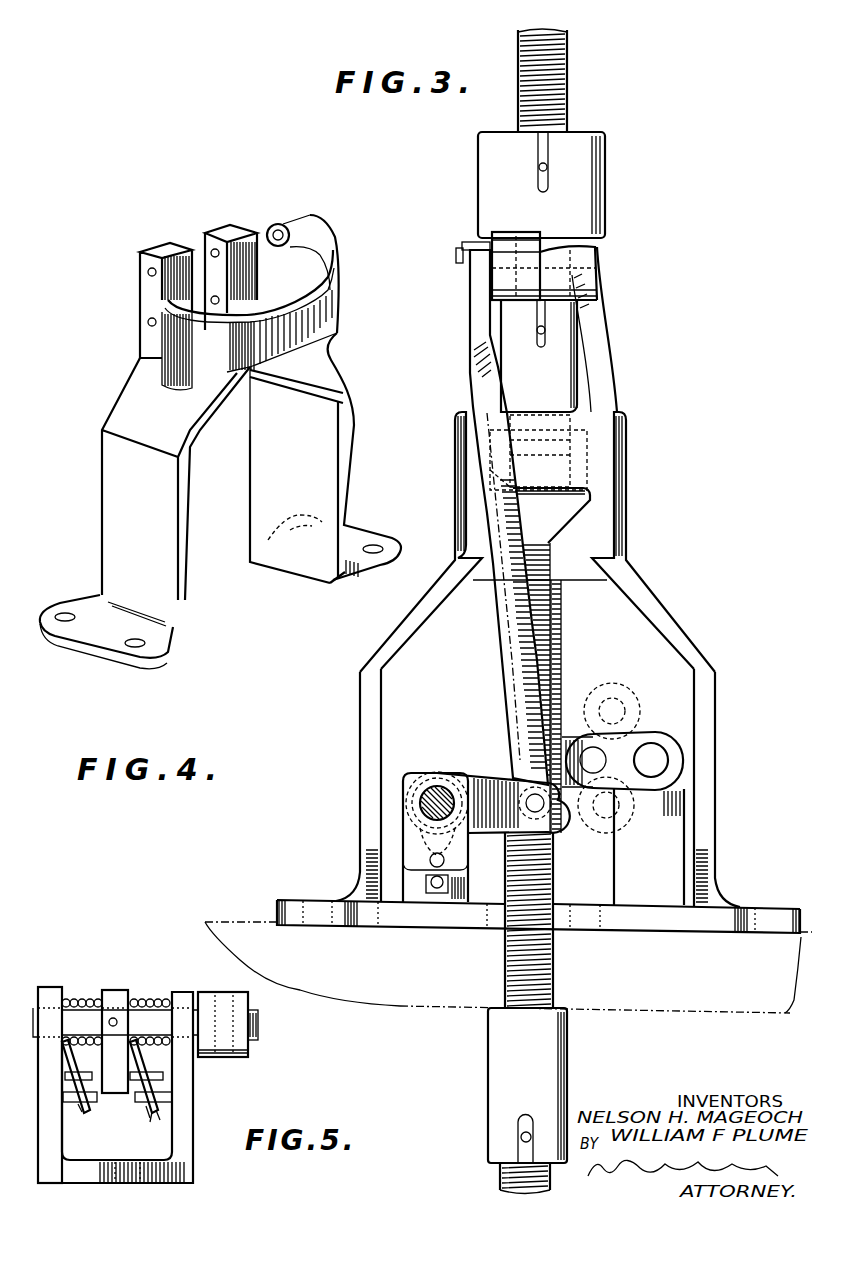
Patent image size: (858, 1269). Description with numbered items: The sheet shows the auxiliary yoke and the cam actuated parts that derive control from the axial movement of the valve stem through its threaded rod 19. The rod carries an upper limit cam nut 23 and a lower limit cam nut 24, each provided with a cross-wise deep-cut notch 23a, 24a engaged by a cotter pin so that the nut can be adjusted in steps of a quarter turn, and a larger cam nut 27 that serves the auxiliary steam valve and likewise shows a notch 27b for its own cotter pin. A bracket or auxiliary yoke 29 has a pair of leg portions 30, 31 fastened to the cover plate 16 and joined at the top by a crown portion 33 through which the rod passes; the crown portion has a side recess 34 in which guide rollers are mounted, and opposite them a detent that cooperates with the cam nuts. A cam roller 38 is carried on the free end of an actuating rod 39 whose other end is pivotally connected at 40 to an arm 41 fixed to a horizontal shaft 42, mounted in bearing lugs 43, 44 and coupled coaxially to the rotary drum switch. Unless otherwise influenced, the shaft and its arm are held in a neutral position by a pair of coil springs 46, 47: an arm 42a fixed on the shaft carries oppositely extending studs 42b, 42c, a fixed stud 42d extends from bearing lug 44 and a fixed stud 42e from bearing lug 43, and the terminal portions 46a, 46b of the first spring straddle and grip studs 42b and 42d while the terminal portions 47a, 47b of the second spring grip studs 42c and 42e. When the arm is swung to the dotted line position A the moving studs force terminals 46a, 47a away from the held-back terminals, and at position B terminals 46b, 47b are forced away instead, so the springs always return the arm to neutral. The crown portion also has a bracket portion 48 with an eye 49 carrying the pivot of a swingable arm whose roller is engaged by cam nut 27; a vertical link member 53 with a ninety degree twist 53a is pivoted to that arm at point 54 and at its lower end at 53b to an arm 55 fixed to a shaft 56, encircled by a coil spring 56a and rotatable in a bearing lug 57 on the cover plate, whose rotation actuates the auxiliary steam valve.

In FIG. 3, the cover plate 16 is at (447, 1004).
In FIG. 3, the threaded rod 19 is at (577, 87).
In FIG. 3, the upper limit cam nut 23 is at (578, 381).
In FIG. 3, the notch 23a is at (546, 347).
In FIG. 3, the lower limit cam nut 24 is at (489, 1104).
In FIG. 3, the notch 24a is at (526, 1117).
In FIG. 3, the cam nut 27 is at (606, 178).
In FIG. 3, the slot in upper block 27b is at (541, 194).
In FIG. 3, the auxiliary yoke 29 is at (540, 659).
In FIG. 4, the auxiliary yoke 29 is at (220, 421).
In FIG. 3, the leg portion 30 is at (360, 666).
In FIG. 4, the leg portion 30 is at (185, 543).
In FIG. 3, the leg portion 31 is at (716, 718).
In FIG. 4, the leg portion 31 is at (350, 478).
In FIG. 4, the crown portion 33 is at (283, 268).
In FIG. 4, the recess 34 is at (196, 240).
In FIG. 3, the cam roller 38 is at (545, 415).
In FIG. 3, the actuating rod 39 is at (562, 650).
In FIG. 3, the pivotal connection 40 is at (588, 749).
In FIG. 3, the arm 41 is at (613, 736).
In FIG. 5, the arm 41 is at (246, 1058).
In FIG. 3, the shaft 42 is at (653, 743).
In FIG. 5, the shaft 42 is at (258, 1028).
In FIG. 5, the arm 42a is at (118, 988).
In FIG. 5, the stud 42b is at (78, 1055).
In FIG. 5, the stud 42c is at (148, 1055).
In FIG. 5, the stud 42d is at (88, 1102).
In FIG. 5, the stud 42e is at (162, 1100).
In FIG. 5, the bearing lug 43 is at (195, 1130).
In FIG. 3, the bearing lug 44 is at (649, 847).
In FIG. 5, the bearing lug 44 is at (50, 985).
In FIG. 5, the coil spring 46 is at (83, 998).
In FIG. 5, the terminal portion 46a is at (77, 1100).
In FIG. 5, the terminal portion 46b is at (76, 1110).
In FIG. 5, the coil spring 47 is at (148, 998).
In FIG. 5, the terminal portion 47a is at (152, 1114).
In FIG. 5, the terminal portion 47b is at (166, 1063).
In FIG. 3, the bracket portion 48 is at (604, 330).
In FIG. 4, the bracket portion 48 is at (343, 263).
In FIG. 3, the eye 49 is at (590, 254).
In FIG. 4, the eye 49 is at (279, 224).
In FIG. 3, the link member 53 is at (512, 673).
In FIG. 3, the ninety degree twist 53a is at (472, 376).
In FIG. 3, the pivotal connection 53b is at (550, 822).
In FIG. 3, the pivot point 54 is at (462, 264).
In FIG. 3, the arm 55 is at (474, 773).
In FIG. 3, the shaft 56 is at (435, 778).
In FIG. 3, the coil spring 56a is at (450, 881).
In FIG. 3, the bearing lug 57 is at (408, 790).
In FIG. 3, the dotted line position A is at (625, 815).
In FIG. 3, the dotted line position B is at (616, 700).